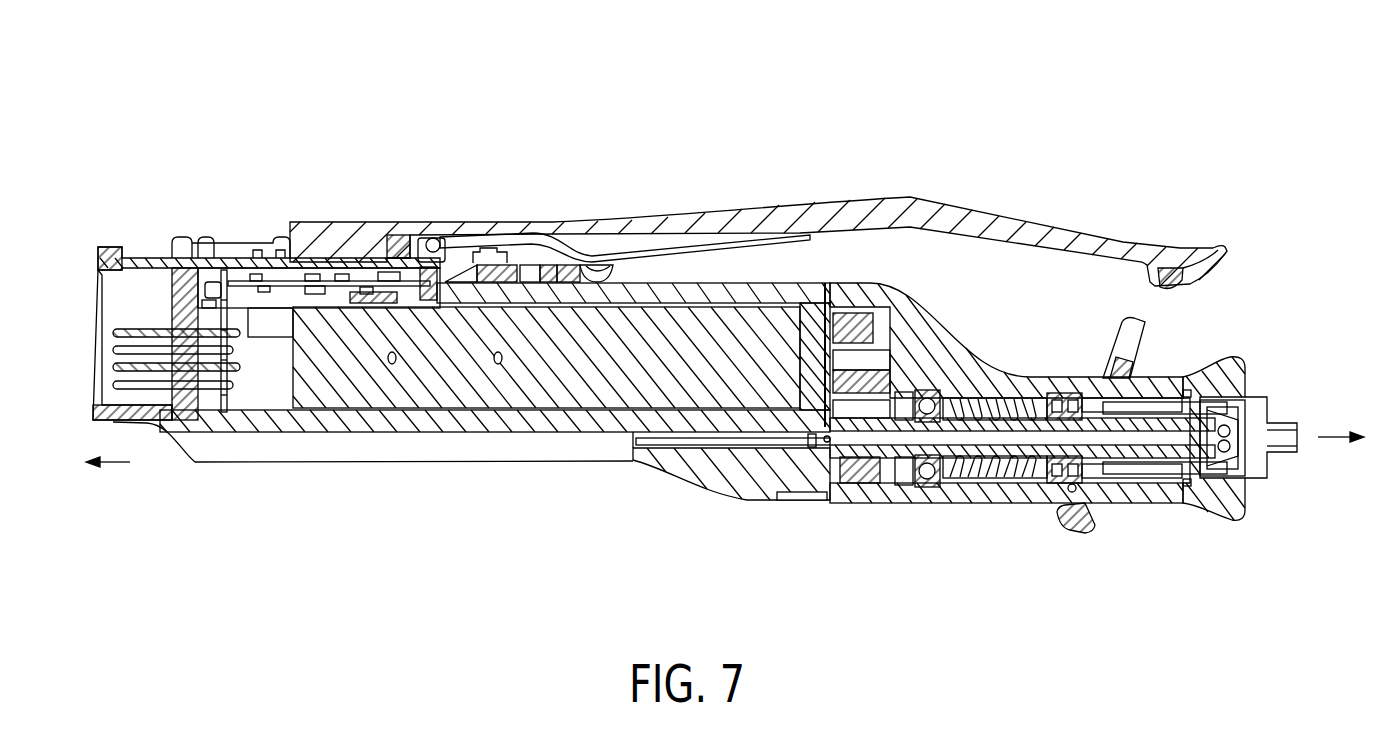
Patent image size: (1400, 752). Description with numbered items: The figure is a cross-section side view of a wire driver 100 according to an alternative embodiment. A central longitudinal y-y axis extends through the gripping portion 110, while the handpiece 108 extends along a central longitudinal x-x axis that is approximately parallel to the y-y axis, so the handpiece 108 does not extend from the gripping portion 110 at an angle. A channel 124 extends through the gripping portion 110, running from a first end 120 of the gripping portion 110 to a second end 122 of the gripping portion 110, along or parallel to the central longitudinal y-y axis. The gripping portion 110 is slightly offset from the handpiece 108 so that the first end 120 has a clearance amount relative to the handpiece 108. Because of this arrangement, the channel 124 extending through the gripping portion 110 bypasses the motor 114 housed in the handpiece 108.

The wire driver 100 is at (597, 148).
The handpiece 108 is at (697, 283).
The gripping portion 110 is at (953, 505).
The motor 114 is at (365, 412).
The first end 120 is at (638, 492).
The second end 122 is at (1260, 528).
The channel 124 is at (815, 448).